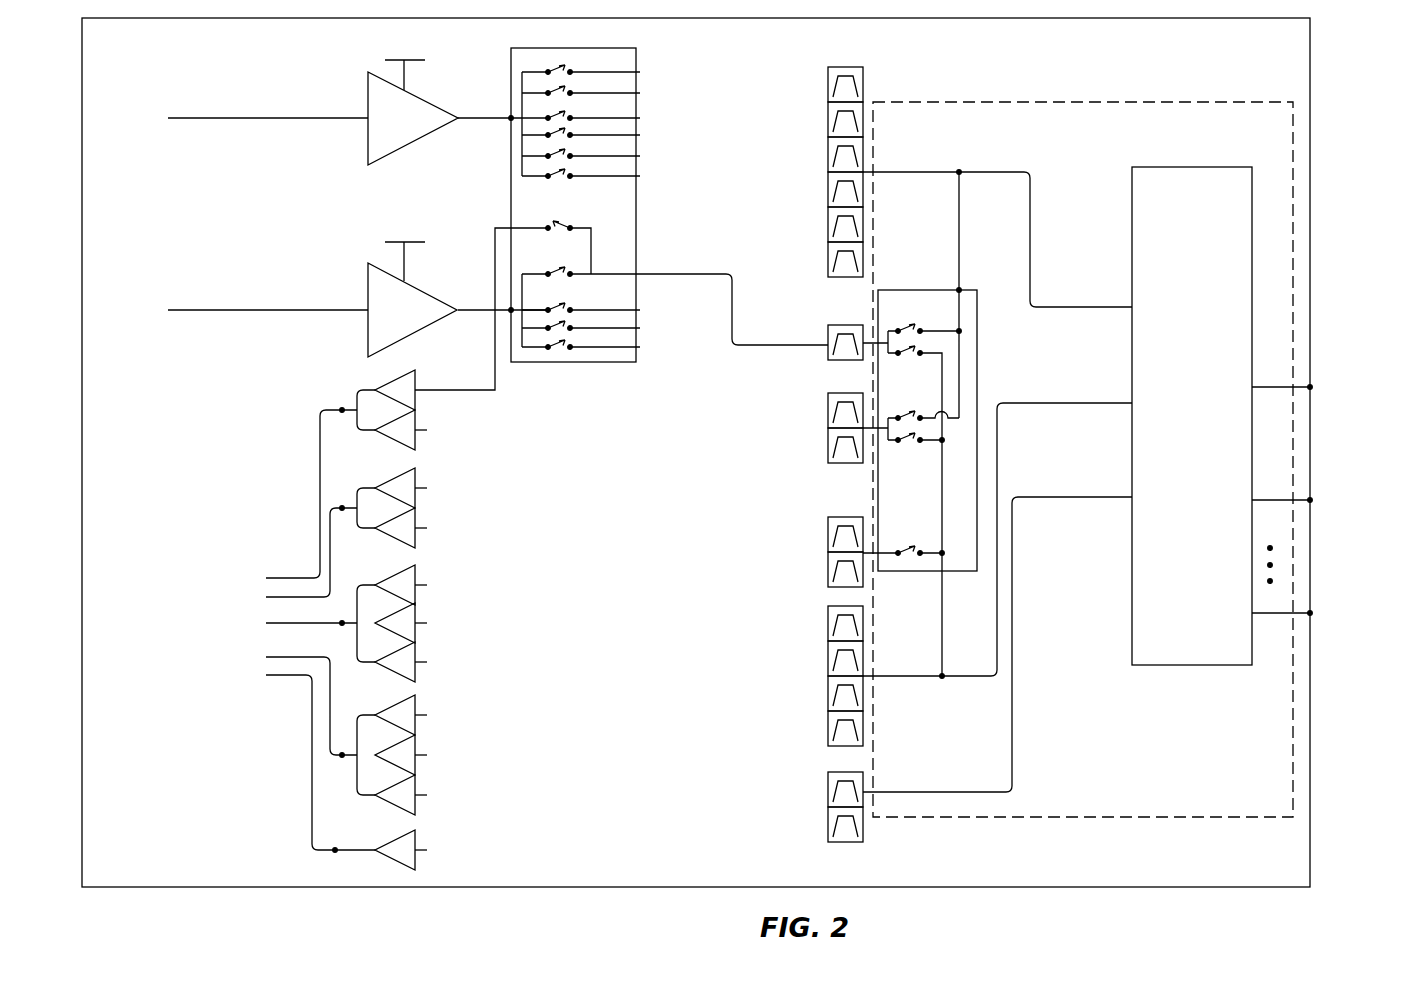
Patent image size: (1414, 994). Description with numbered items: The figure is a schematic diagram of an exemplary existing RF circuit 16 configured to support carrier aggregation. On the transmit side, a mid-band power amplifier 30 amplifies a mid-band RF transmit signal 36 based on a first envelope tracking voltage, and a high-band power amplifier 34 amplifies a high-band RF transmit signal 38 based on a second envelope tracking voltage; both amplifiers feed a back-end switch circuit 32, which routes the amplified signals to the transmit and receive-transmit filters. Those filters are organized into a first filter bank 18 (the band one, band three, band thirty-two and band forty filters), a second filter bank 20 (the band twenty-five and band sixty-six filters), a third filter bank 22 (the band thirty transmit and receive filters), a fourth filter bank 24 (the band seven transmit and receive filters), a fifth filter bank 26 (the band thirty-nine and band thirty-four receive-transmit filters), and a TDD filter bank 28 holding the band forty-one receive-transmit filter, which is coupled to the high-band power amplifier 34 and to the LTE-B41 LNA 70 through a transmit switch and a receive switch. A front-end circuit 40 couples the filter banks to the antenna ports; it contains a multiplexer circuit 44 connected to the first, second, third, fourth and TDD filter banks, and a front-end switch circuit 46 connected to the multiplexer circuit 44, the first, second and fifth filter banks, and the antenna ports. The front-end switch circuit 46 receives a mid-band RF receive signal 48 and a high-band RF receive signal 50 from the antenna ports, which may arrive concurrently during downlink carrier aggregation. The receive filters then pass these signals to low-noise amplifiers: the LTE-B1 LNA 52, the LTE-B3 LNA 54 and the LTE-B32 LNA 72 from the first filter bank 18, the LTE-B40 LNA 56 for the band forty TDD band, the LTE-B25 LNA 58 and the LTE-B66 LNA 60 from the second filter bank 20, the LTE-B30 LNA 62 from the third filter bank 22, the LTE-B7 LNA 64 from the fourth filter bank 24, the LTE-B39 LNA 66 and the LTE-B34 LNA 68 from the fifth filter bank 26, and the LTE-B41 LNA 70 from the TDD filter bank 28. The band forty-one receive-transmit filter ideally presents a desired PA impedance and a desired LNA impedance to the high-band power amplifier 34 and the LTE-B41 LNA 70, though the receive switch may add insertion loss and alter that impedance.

The RF circuit 16 is at (144, 455).
The first filter bank 18 is at (838, 67).
The second filter bank 20 is at (840, 746).
The third filter bank 22 is at (838, 517).
The fourth filter bank 24 is at (845, 463).
The fifth filter bank 26 is at (845, 842).
The TDD filter bank 28 is at (841, 360).
The mid-band power amplifier 30 is at (413, 99).
The back-end switch circuit 32 is at (578, 362).
The high-band power amplifier 34 is at (412, 291).
The mid-band RF transmit signal 36 is at (612, 286).
The high-band RF transmit signal 38 is at (614, 386).
The front-end circuit 40 is at (1083, 459).
The multiplexer circuit 44 is at (895, 571).
The front-end switch circuit 46 is at (1202, 416).
The mid-band RF receive signal 48 is at (997, 364).
The high-band RF receive signal 50 is at (997, 570).
The LTE-B1 LNA 52 is at (427, 585).
The LTE-B3 LNA 54 is at (427, 755).
The LTE-B40 LNA 56 is at (424, 488).
The LTE-B25 LNA 58 is at (433, 795).
The LTE-B66 LNA 60 is at (446, 623).
The LTE-B30 LNA 62 is at (433, 528).
The LTE-B7 LNA 64 is at (427, 430).
The LTE-B39 LNA 66 is at (433, 715).
The LTE-B34 LNA 68 is at (433, 662).
The LTE-B41 LNA 70 is at (395, 390).
The LTE-B32 LNA 72 is at (433, 850).